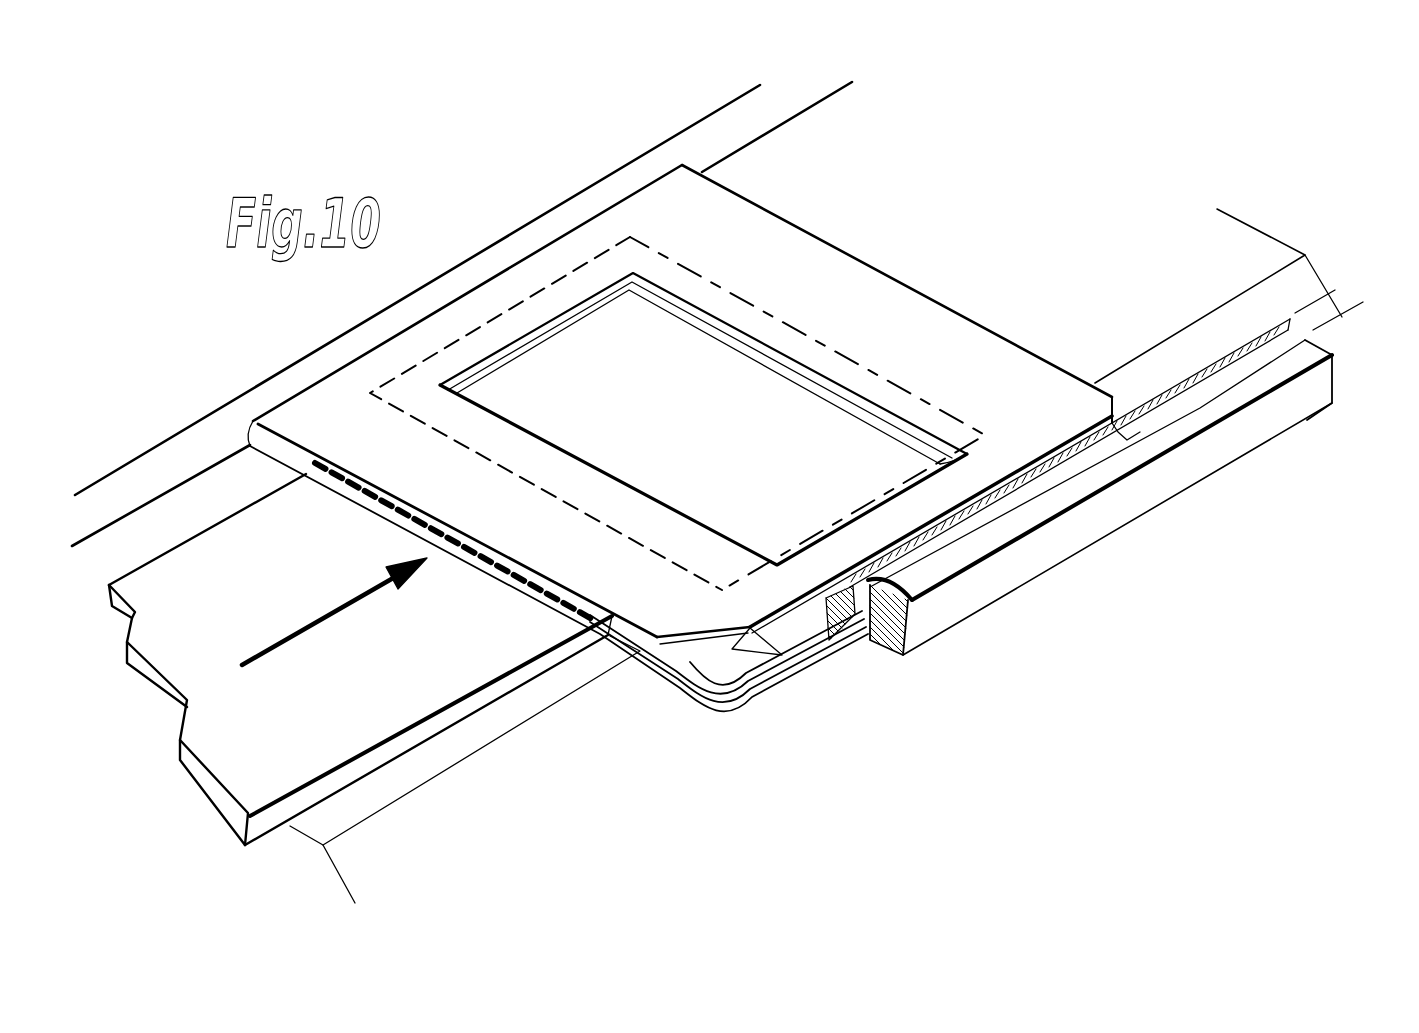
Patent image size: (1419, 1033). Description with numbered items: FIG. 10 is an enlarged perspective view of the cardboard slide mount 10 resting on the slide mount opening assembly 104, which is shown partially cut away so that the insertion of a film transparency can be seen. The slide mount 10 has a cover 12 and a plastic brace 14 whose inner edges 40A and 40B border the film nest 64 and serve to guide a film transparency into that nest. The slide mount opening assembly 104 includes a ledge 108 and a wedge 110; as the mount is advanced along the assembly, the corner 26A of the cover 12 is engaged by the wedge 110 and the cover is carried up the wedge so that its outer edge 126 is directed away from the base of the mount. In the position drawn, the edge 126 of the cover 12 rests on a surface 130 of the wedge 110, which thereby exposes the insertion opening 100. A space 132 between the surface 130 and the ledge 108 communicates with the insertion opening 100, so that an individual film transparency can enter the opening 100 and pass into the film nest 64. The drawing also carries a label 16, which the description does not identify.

The cardboard slide mount 10 is at (606, 146).
The cover 12 is at (972, 335).
The plastic brace 14 is at (710, 672).
The panel edge 16 is at (648, 668).
The corner of cover 26A is at (1127, 470).
The inner edge of plastic brace 40A is at (500, 478).
The inner edge of plastic brace 40B is at (750, 300).
The film nest 64 is at (655, 258).
The insertion opening 100 is at (735, 672).
The slide mount opening assembly 104 is at (1346, 344).
The ledge 108 is at (1067, 490).
The wedge 110 is at (783, 632).
The outer edge of cover 126 is at (1088, 430).
The surface of wedge 130 is at (1150, 403).
The space 132 is at (1390, 320).